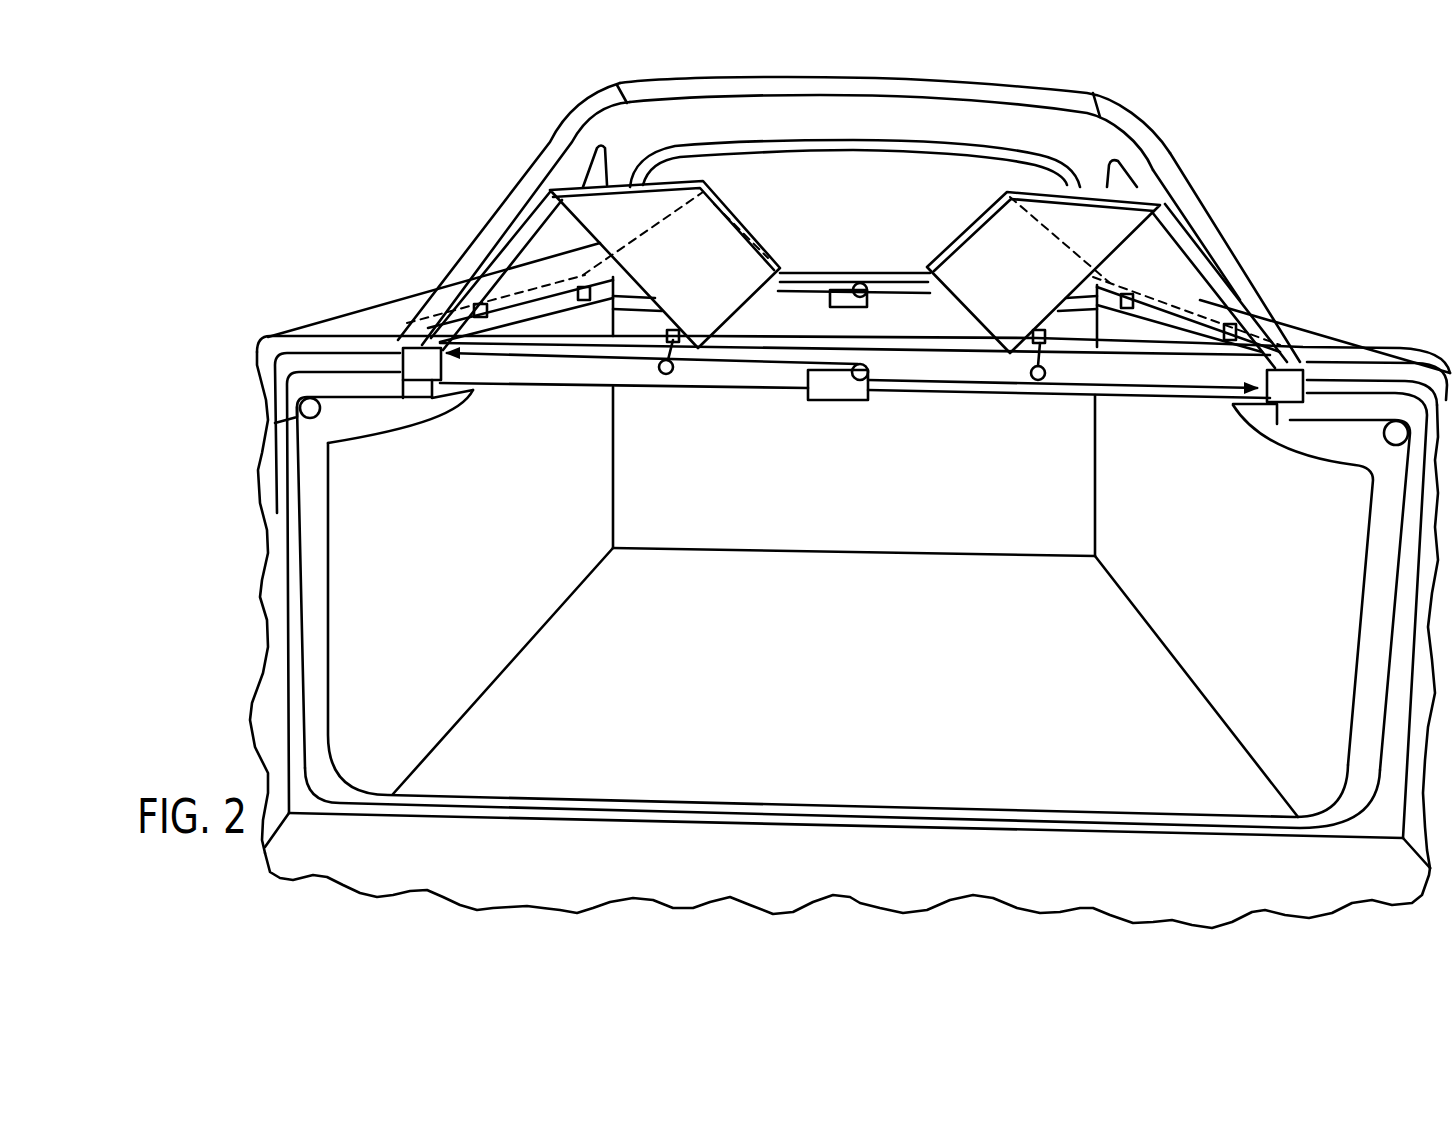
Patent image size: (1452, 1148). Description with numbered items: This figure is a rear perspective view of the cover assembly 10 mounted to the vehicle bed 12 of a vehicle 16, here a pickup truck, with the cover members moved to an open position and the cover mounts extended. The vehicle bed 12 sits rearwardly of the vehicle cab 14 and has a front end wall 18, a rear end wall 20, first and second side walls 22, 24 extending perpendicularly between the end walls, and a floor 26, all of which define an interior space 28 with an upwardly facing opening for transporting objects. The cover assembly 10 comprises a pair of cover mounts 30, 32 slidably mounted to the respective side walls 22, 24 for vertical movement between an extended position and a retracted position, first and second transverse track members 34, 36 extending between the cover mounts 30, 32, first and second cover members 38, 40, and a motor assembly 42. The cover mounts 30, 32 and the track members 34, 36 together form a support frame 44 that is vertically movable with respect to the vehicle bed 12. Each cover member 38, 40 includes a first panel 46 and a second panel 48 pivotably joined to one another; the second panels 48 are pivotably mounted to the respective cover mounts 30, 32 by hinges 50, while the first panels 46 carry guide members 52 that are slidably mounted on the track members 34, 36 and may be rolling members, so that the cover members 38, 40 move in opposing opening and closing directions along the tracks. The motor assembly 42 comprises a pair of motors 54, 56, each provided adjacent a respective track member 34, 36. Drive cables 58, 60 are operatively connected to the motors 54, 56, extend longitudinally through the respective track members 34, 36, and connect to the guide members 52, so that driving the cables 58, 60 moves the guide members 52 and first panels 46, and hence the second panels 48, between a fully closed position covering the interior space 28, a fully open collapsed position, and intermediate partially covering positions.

The cover assembly 10 is at (1240, 258).
The vehicle bed 12 is at (1300, 428).
The vehicle cab 14 is at (1167, 155).
The vehicle 16 is at (556, 133).
The front end wall 18 is at (968, 511).
The rear end wall 20 is at (820, 871).
The first side wall 22 is at (535, 526).
The second side wall 24 is at (1235, 541).
The floor 26 is at (843, 706).
The interior space 28 is at (393, 470).
The first cover mount 30 is at (422, 365).
The second cover mount 32 is at (1293, 362).
The first transverse track member 34 is at (733, 382).
The second transverse track member 36 is at (800, 292).
The first cover member 38 is at (697, 213).
The second cover member 40 is at (1063, 217).
The motor assembly 42 is at (832, 418).
The support frame 44 is at (471, 408).
The first panel 46 is at (740, 250).
The second panel 48 is at (490, 253).
The hinges 50 is at (537, 195).
The guide members 52 is at (663, 376).
The motor 54 is at (858, 402).
The motor 56 is at (852, 300).
The drive cable 58 is at (946, 383).
The drive cable 60 is at (910, 295).